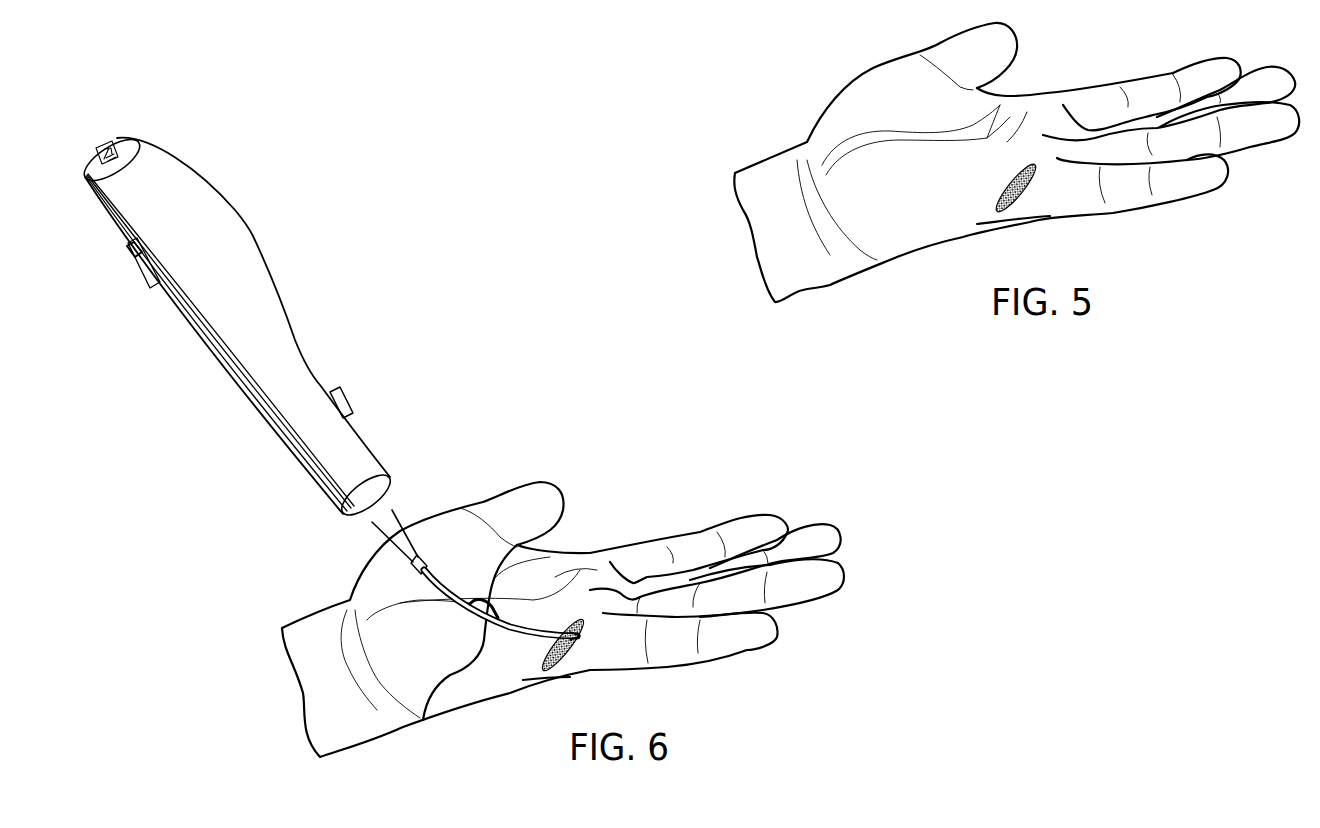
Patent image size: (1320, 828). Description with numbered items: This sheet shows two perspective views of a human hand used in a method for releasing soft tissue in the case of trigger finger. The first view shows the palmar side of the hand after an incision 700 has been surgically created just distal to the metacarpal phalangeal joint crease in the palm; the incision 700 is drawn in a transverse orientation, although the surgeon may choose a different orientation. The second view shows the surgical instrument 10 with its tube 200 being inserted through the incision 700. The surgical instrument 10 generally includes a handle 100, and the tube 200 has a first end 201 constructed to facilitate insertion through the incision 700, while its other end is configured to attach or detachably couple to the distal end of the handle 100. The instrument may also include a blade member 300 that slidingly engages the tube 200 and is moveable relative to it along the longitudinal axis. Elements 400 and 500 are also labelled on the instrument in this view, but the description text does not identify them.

In FIG. 6, the surgical instrument 10 is at (352, 423).
In FIG. 6, the handle 100 is at (187, 215).
In FIG. 6, the tube 200 is at (547, 569).
In FIG. 6, the first end 201 is at (577, 636).
In FIG. 6, the blade member 300 is at (423, 720).
In FIG. 6, the tube clip / connector 400 is at (485, 615).
In FIG. 6, the actuation button 500 is at (350, 397).
In FIG. 5, the incision 700 is at (1006, 210).
In FIG. 6, the incision 700 is at (554, 662).